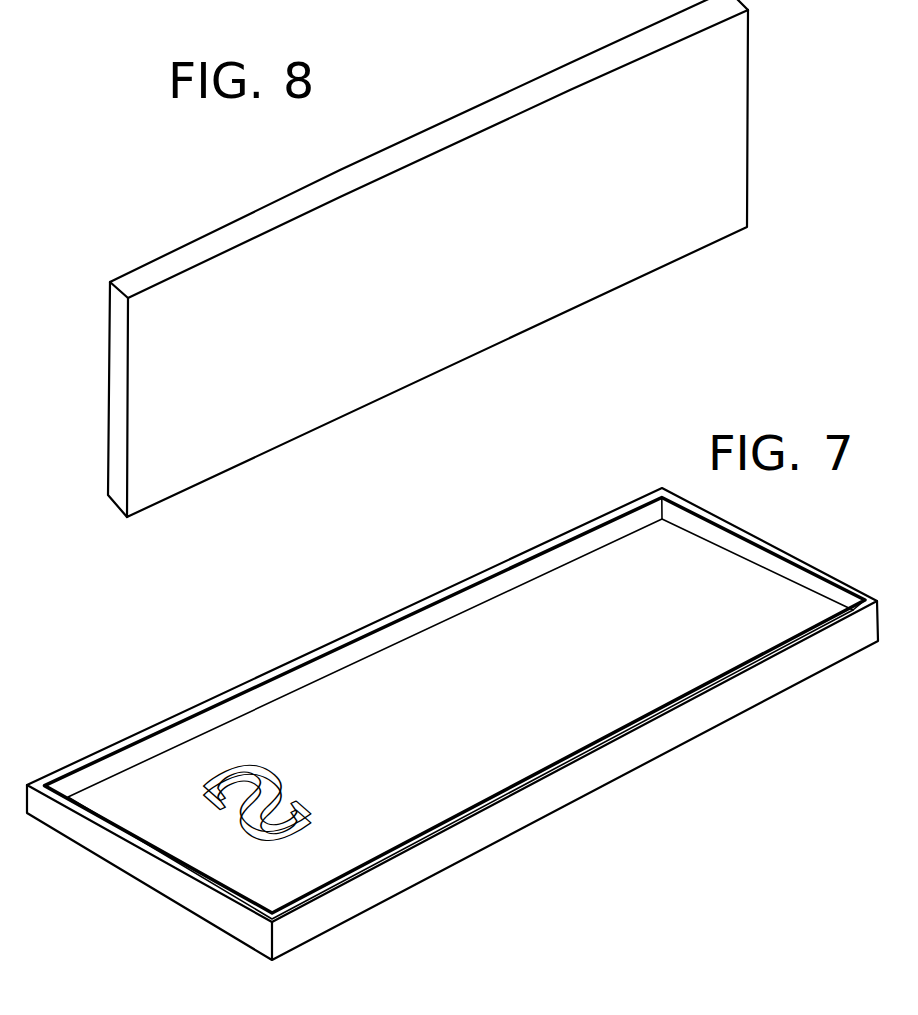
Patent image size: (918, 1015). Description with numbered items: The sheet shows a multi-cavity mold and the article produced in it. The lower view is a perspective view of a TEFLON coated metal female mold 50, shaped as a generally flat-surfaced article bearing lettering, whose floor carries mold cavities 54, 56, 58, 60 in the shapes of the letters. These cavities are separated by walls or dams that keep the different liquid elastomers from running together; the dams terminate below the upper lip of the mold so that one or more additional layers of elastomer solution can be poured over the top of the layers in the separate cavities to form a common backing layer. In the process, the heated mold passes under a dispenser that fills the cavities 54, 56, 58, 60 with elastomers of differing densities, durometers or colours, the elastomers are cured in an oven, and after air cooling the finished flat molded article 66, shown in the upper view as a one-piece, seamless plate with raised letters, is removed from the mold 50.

In FIG. 7, the female mold 50 is at (524, 806).
In FIG. 7, the mold cavity 54 is at (627, 590).
In FIG. 7, the mold cavity 56 is at (553, 632).
In FIG. 7, the mold cavity 58 is at (485, 663).
In FIG. 7, the mold cavity 60 is at (331, 739).
In FIG. 8, the flat molded article 66 is at (261, 196).